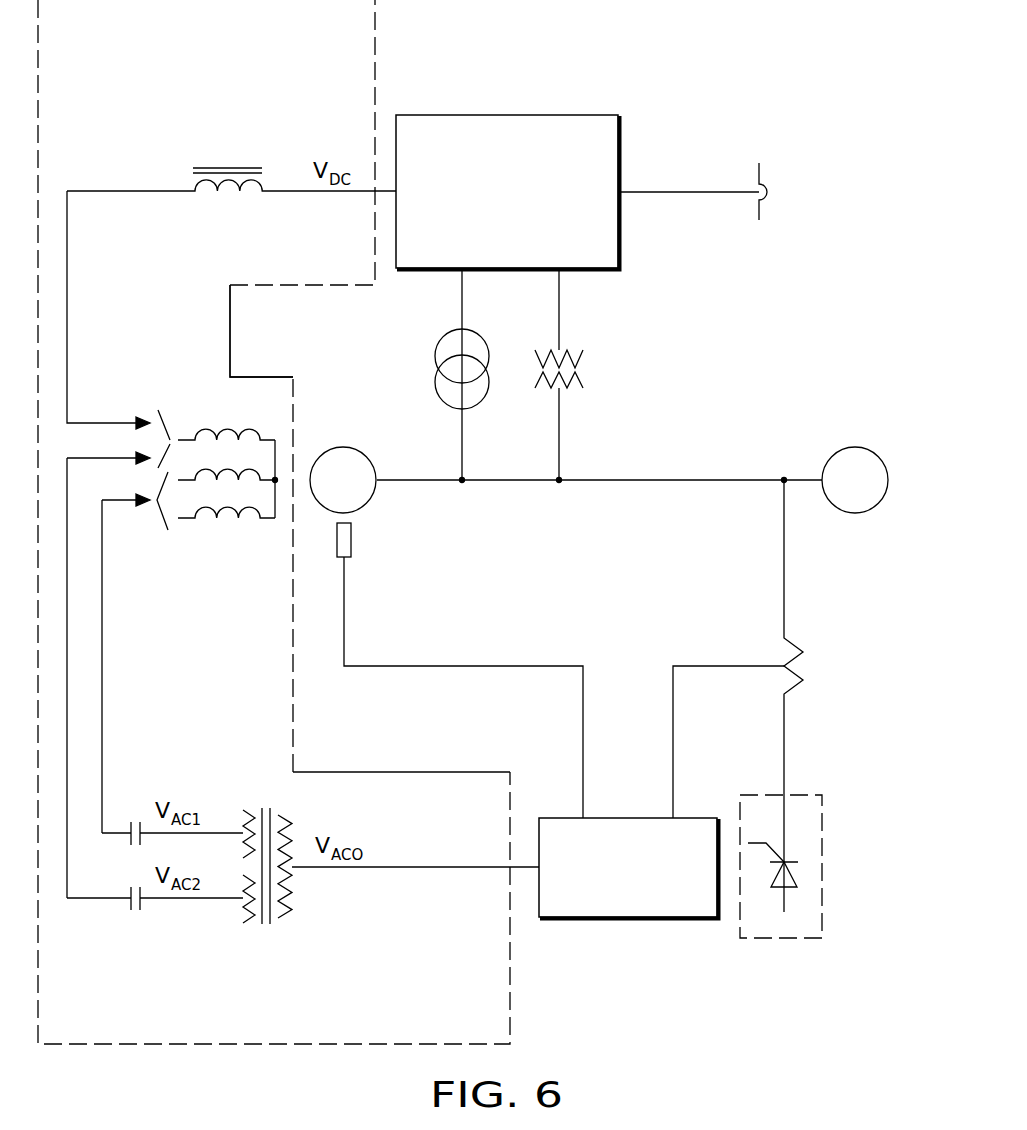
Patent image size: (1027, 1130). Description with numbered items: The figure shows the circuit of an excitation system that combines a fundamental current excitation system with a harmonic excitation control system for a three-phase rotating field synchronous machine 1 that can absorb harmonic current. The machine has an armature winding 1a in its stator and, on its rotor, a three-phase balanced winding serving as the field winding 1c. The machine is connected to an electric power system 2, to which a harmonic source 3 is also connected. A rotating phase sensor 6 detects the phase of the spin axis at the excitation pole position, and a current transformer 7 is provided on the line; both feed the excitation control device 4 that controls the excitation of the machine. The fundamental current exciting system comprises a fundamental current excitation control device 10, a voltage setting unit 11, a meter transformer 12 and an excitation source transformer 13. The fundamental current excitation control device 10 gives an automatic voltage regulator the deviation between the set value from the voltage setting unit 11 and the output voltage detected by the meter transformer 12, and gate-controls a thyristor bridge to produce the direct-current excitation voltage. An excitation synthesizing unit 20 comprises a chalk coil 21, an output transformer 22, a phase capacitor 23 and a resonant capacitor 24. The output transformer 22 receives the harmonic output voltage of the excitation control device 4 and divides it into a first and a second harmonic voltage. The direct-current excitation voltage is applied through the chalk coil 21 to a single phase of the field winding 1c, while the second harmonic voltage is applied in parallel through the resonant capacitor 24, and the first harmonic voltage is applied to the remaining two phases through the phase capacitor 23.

The synchronous machine 1 is at (292, 337).
The armature winding 1a is at (366, 450).
The field winding 1c is at (213, 427).
The electric power system 2 is at (855, 447).
The harmonic source 3 is at (808, 792).
The excitation control device 4 is at (646, 818).
The rotating phase sensor 6 is at (352, 537).
The current transformer 7 is at (800, 672).
The fundamental current excitation control device 10 is at (563, 115).
The voltage setting unit 11 is at (766, 170).
The meter transformer 12 is at (583, 368).
The excitation source transformer 13 is at (435, 352).
The excitation synthesizing unit 20 is at (203, 97).
The chalk coil 21 is at (231, 200).
The output transformer 22 is at (265, 925).
The phase capacitor 23 is at (131, 822).
The resonant capacitor 24 is at (128, 905).